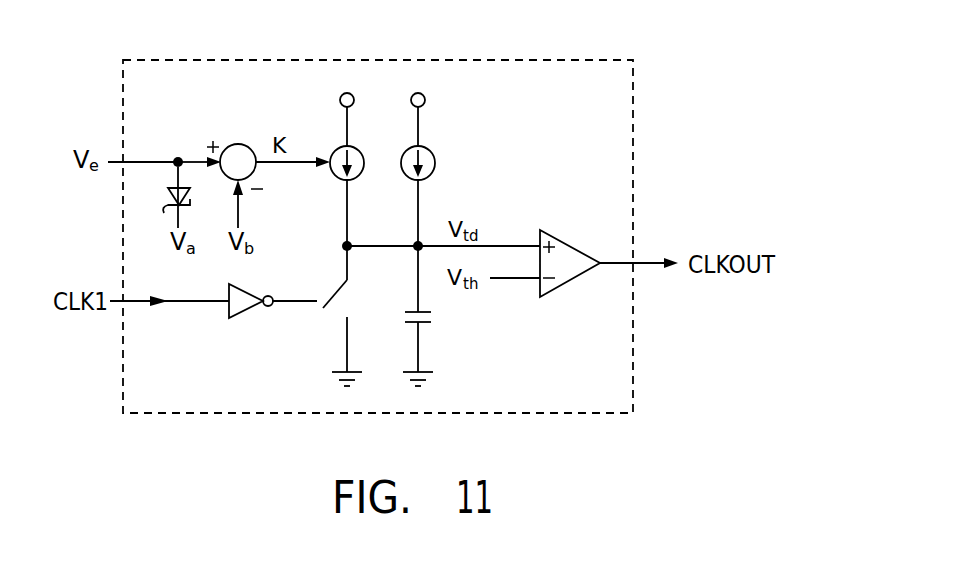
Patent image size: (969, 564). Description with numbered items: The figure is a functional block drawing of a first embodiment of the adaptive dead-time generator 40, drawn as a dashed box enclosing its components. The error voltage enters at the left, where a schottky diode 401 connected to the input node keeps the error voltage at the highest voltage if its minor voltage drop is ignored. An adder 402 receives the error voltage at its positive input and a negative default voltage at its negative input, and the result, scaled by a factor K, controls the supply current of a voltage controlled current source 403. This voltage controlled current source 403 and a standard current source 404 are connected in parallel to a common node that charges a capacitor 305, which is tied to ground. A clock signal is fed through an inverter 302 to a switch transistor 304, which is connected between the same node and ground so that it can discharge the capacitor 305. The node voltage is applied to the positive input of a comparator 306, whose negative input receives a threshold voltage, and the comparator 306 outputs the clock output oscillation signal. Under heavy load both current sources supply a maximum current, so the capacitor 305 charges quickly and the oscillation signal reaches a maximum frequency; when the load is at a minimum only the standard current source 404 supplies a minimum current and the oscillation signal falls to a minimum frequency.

The adaptive dead-time generator 40 is at (550, 60).
The schottky diode 401 is at (172, 197).
The adder 402 is at (254, 174).
The voltage controlled current source 403 is at (355, 148).
The standard current source 404 is at (428, 148).
The inverter 302 is at (233, 316).
The switch transistor 304 is at (336, 312).
The capacitor 305 is at (436, 323).
The comparator 306 is at (578, 245).